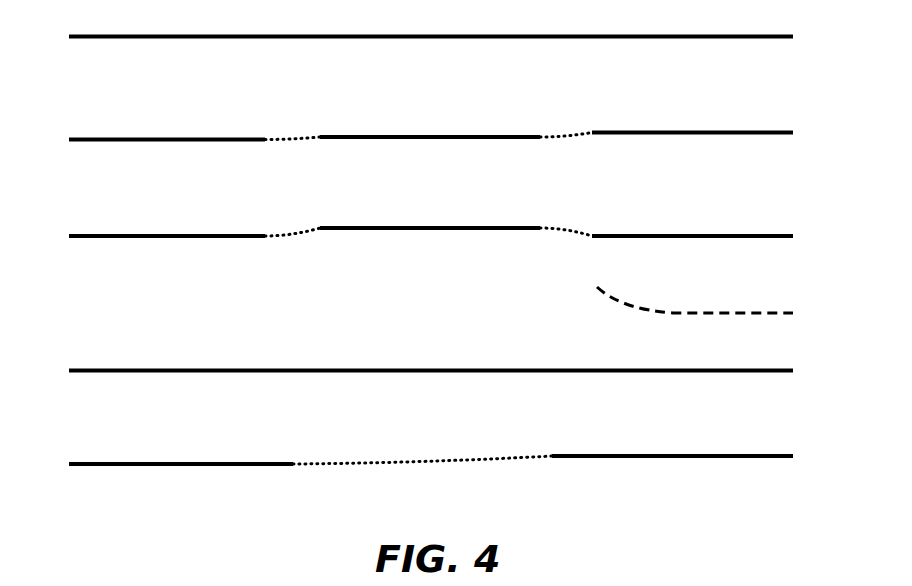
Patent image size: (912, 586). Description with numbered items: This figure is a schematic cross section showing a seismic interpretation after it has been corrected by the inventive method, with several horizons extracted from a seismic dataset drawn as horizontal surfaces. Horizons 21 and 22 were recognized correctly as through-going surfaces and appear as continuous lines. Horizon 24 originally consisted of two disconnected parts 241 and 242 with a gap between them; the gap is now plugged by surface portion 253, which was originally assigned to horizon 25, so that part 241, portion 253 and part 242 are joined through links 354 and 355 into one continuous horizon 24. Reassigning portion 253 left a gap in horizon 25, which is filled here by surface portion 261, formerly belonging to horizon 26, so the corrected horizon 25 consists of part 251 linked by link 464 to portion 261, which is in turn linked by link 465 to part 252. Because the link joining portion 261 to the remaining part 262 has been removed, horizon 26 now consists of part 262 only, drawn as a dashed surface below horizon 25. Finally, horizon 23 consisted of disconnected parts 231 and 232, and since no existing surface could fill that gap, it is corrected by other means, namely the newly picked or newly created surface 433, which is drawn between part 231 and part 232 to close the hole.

The horizon 21 is at (412, 39).
The horizon 22 is at (412, 371).
The horizon 23 is at (431, 472).
The horizon 24 is at (431, 148).
The horizon 25 is at (431, 247).
The horizon 26 is at (714, 316).
The disconnected part of horizon 24 241 is at (119, 142).
The link 354 is at (290, 142).
The surface portion 253 is at (404, 139).
The link 355 is at (566, 136).
The disconnected part of horizon 24 242 is at (705, 135).
The part of horizon 25 251 is at (119, 239).
The link 464 is at (285, 238).
The surface portion 261 is at (404, 230).
The link 465 is at (565, 238).
The part of horizon 25 252 is at (704, 238).
The part of horizon 26 262 is at (704, 315).
The disconnected part of horizon 23 231 is at (119, 466).
The newly picked or newly created surface 433 is at (410, 460).
The disconnected part of horizon 23 232 is at (704, 458).